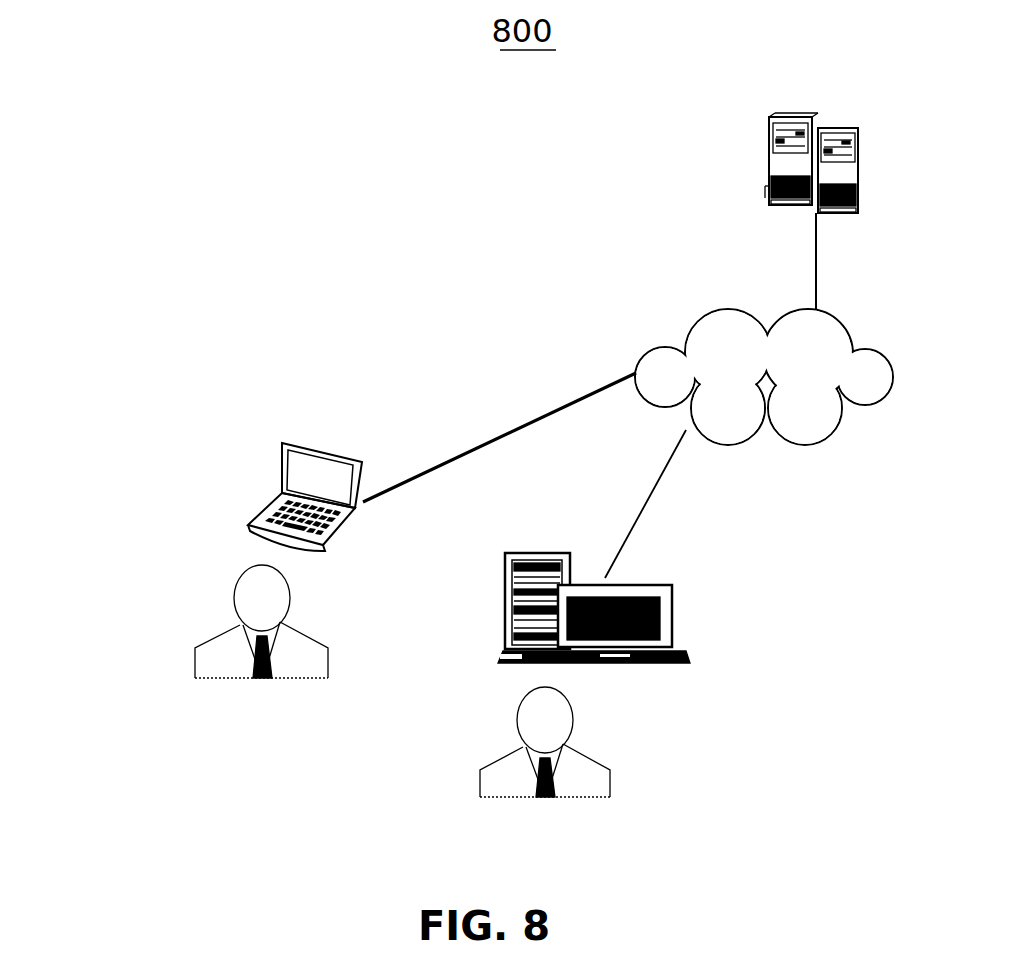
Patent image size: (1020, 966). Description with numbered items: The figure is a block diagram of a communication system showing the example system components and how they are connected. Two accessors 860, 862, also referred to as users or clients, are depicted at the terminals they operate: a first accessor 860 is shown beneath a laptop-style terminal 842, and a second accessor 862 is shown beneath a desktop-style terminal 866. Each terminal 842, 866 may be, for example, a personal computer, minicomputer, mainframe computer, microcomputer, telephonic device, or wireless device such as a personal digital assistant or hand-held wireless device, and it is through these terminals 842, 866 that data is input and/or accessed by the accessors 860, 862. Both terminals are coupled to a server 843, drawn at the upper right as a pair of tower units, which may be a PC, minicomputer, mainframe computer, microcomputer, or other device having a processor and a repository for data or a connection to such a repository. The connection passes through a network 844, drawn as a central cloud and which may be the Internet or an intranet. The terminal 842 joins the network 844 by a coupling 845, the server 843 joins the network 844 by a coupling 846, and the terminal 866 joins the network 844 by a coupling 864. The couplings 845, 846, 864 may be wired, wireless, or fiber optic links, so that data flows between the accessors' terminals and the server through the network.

The terminal 842 is at (258, 463).
The server 843 is at (850, 132).
The network 844 is at (683, 325).
The coupling 845 is at (492, 440).
The coupling 846 is at (812, 253).
The accessor 860 is at (218, 622).
The accessor 862 is at (610, 768).
The coupling 864 is at (650, 502).
The terminal 866 is at (665, 625).